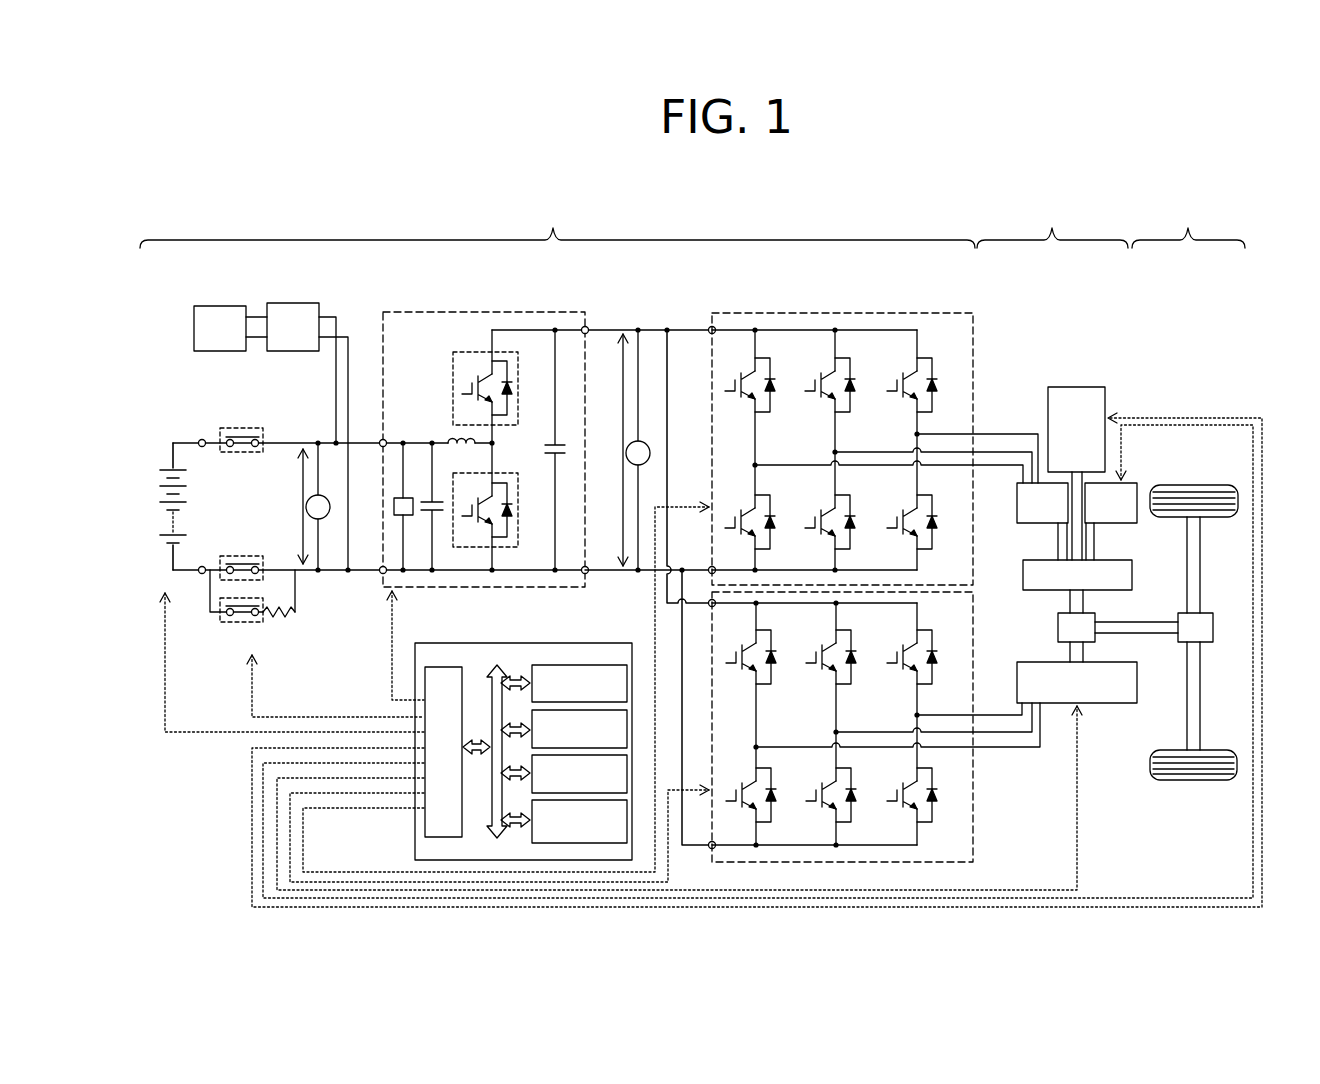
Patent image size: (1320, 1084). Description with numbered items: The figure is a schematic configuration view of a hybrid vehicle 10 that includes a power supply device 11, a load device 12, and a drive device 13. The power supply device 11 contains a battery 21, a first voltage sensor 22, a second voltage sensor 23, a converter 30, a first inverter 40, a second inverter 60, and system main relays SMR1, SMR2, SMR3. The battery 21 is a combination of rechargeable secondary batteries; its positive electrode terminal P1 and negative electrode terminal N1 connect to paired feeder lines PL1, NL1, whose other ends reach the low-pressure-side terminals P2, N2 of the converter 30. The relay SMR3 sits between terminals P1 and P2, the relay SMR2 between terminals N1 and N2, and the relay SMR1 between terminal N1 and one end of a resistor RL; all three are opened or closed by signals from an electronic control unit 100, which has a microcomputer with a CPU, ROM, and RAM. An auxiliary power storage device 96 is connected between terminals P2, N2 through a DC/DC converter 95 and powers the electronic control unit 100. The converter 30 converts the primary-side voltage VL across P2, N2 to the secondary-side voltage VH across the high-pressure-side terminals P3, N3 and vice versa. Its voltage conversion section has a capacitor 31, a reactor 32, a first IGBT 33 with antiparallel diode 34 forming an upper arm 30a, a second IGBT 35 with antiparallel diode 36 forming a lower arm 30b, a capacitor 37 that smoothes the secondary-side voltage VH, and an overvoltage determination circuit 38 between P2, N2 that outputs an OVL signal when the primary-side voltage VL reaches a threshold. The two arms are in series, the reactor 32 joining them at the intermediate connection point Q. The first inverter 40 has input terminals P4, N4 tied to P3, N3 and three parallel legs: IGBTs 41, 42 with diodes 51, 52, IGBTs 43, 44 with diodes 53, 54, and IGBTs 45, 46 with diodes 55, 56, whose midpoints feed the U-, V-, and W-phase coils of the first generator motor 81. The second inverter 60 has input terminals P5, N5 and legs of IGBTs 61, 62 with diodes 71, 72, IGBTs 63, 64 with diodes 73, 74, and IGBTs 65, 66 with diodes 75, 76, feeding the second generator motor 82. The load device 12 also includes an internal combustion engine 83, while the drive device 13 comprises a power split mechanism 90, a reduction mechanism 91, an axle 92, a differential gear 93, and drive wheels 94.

The hybrid vehicle 10 is at (1087, 298).
The power supply device 11 is at (557, 222).
The load device 12 is at (1052, 209).
The drive device 13 is at (1194, 209).
The battery 21 is at (162, 487).
The first voltage sensor 22 is at (330, 508).
The second voltage sensor 23 is at (647, 447).
The converter 30 is at (487, 312).
The upper arm 30a is at (453, 386).
The lower arm 30b is at (525, 546).
The capacitor 31 is at (430, 500).
The reactor 32 is at (448, 438).
The first insulated-gate bipolar transistor 33 is at (466, 372).
The diode 34 is at (510, 387).
The second insulated-gate bipolar transistor 35 is at (466, 495).
The diode 36 is at (510, 509).
The capacitor 37 is at (552, 445).
The overvoltage determination circuit 38 is at (394, 507).
The first inverter 40 is at (943, 313).
The IGBT 41 is at (734, 399).
The IGBT 42 is at (735, 535).
The IGBT 43 is at (812, 402).
The IGBT 44 is at (814, 535).
The IGBT 45 is at (889, 401).
The IGBT 46 is at (895, 535).
The diode 51 is at (777, 379).
The diode 52 is at (777, 517).
The diode 53 is at (857, 379).
The diode 54 is at (857, 517).
The diode 55 is at (939, 379).
The diode 56 is at (939, 517).
The second inverter 60 is at (942, 862).
The IGBT 61 is at (735, 671).
The IGBT 62 is at (735, 808).
The IGBT 63 is at (815, 671).
The IGBT 64 is at (815, 808).
The IGBT 65 is at (896, 671).
The IGBT 66 is at (896, 808).
The diode 71 is at (778, 651).
The diode 72 is at (778, 790).
The diode 73 is at (858, 651).
The diode 74 is at (858, 790).
The diode 75 is at (939, 651).
The diode 76 is at (939, 790).
The first generator motor 81 is at (1031, 523).
The second generator motor 82 is at (1103, 703).
The internal combustion engine 83 is at (1091, 387).
The power split mechanism 90 is at (1040, 590).
The reduction mechanism 91 is at (1058, 630).
The axle 92 is at (1166, 622).
The differential gear 93 is at (1203, 645).
The drive wheels 94 is at (1225, 485).
The DC/DC converter 95 is at (291, 303).
The auxiliary power storage device 96 is at (219, 306).
The electronic control unit 100 is at (495, 643).
The positive electrode terminal P1 is at (203, 440).
The low-pressure-side terminal P2 is at (385, 440).
The high-pressure-side terminal P3 is at (587, 327).
The input terminal P4 is at (709, 327).
The input terminal P5 is at (714, 606).
The negative electrode terminal N1 is at (203, 574).
The low-pressure-side terminal N2 is at (382, 574).
The high-pressure-side terminal N3 is at (587, 574).
The input terminal N4 is at (709, 567).
The input terminal N5 is at (711, 849).
The feeder line PL1 is at (228, 446).
The feeder line NL1 is at (210, 568).
The system main relay SMR1 is at (252, 611).
The system main relay SMR2 is at (250, 555).
The system main relay SMR3 is at (250, 428).
The resistor RL is at (285, 617).
The primary-side voltage VL is at (288, 506).
The secondary-side voltage VH is at (607, 450).
The intermediate connection point Q is at (494, 445).